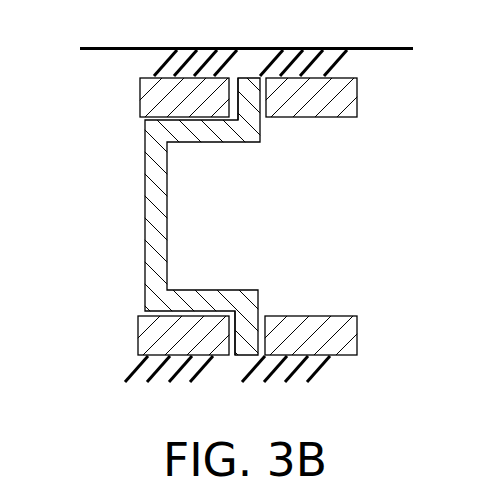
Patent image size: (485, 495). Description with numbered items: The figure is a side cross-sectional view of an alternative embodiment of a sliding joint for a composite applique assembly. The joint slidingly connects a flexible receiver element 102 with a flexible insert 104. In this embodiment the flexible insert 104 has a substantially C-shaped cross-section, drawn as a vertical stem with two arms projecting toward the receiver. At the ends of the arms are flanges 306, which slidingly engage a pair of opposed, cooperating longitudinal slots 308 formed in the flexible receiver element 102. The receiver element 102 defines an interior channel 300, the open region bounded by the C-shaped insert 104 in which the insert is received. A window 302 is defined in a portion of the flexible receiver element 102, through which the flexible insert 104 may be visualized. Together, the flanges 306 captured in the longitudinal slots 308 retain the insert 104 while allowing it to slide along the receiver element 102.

The interior channel 300 is at (337, 230).
The window 302 is at (120, 217).
The flexible receiver element 102 is at (347, 97).
The flexible insert 104 is at (160, 255).
The flanges 306 is at (260, 124).
The longitudinal slots 308 is at (262, 58).